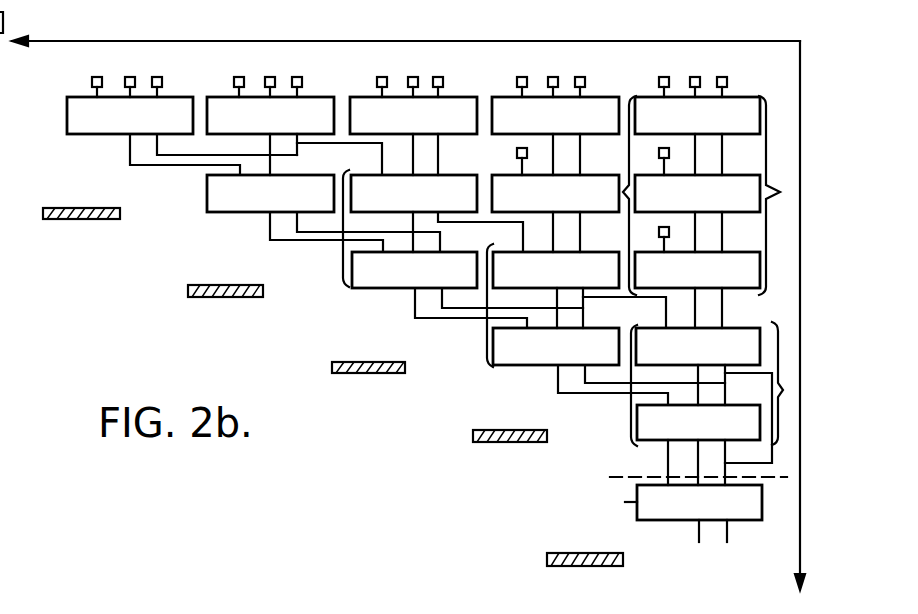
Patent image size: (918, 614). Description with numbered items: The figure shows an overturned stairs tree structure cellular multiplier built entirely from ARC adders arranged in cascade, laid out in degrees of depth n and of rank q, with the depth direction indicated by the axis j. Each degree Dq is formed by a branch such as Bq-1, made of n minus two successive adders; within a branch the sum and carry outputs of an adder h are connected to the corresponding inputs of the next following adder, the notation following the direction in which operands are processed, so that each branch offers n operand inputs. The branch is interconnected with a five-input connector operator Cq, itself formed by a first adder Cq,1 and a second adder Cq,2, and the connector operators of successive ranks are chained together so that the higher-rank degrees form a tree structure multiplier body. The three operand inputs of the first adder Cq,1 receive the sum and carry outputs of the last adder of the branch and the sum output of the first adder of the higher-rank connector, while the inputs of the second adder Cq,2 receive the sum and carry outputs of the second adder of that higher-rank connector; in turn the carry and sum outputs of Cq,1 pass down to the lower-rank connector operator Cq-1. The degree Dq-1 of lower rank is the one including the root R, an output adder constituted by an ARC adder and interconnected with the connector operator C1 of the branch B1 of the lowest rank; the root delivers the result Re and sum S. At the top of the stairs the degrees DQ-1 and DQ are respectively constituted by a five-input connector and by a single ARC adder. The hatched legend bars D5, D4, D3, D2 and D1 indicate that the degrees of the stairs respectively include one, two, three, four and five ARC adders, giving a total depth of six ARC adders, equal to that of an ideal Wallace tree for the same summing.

The degree of rank Q DQ is at (193, 79).
The degree of rank Q-1 DQ-1 is at (333, 79).
The current degree of rank q Dq is at (616, 79).
The degree of rank q-1 Dq-1 is at (758, 79).
The first ARC adder of connector operator Cq Cq,1 is at (507, 261).
The connector operator of rank q Cq is at (487, 297).
The second ARC adder of connector operator Cq Cq,2 is at (522, 355).
The connector operator of rank q-1 Cq-1 is at (630, 373).
The branch of rank q-1 Bq-1 is at (627, 195).
The ARC adder h is at (722, 154).
The branch of rank 1 B1 is at (710, 195).
The connector operator of rank 1 C1 is at (783, 390).
The root R is at (620, 504).
The ARC adder ARC is at (752, 517).
The result output Re is at (698, 547).
The sign output S is at (728, 547).
The j axis j is at (414, 313).
The degree D1 is at (581, 547).
The degree D2 is at (496, 426).
The degree D3 is at (360, 356).
The degree D4 is at (220, 279).
The degree D5 is at (80, 199).